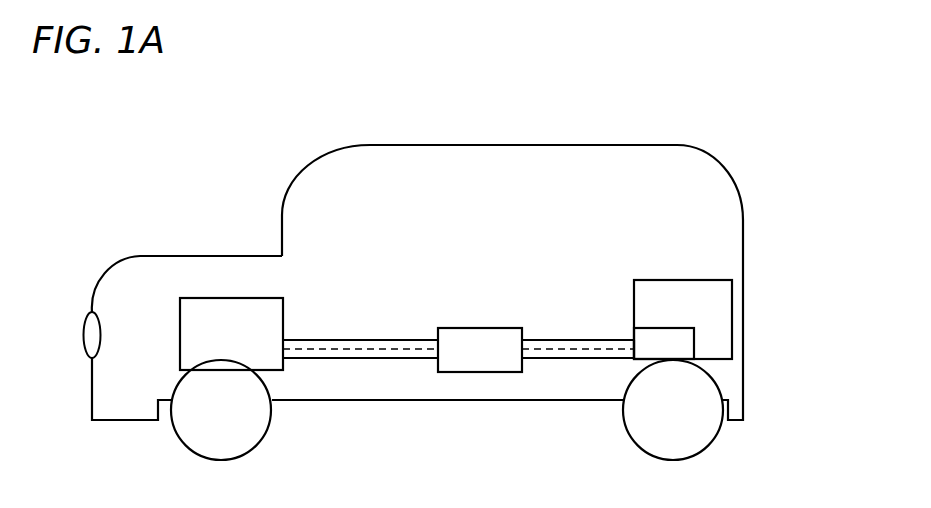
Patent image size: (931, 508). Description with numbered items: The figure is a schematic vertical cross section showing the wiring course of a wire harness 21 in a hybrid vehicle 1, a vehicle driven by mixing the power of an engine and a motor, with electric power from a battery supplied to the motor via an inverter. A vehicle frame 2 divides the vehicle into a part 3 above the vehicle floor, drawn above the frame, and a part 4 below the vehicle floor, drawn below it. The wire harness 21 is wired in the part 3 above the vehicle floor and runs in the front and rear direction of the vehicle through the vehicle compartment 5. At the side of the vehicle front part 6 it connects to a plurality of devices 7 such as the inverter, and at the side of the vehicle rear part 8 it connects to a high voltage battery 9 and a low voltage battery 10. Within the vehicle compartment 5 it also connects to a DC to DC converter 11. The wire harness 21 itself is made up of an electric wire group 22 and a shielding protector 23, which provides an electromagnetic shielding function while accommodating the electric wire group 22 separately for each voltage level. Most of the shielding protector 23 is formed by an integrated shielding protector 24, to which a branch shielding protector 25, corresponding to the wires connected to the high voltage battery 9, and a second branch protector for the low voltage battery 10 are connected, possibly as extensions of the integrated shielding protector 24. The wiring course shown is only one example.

The hybrid vehicle 1 is at (760, 228).
The vehicle frame 2 is at (537, 402).
The part above vehicle floor 3 is at (335, 375).
The part below vehicle floor 4 is at (390, 410).
The vehicle compartment 5 is at (445, 188).
The vehicle front part 6 is at (122, 290).
The devices 7 is at (232, 310).
The vehicle rear part 8 is at (727, 255).
The high voltage battery 9 is at (707, 298).
The low voltage battery 10 is at (670, 343).
The DC to DC converter 11 is at (480, 360).
The wire harness 21 is at (563, 340).
The electric wire group 22 is at (537, 350).
The shielding protector 23 is at (370, 338).
The integrated shielding protector 24 is at (398, 338).
The branch shielding protector 25 is at (605, 338).